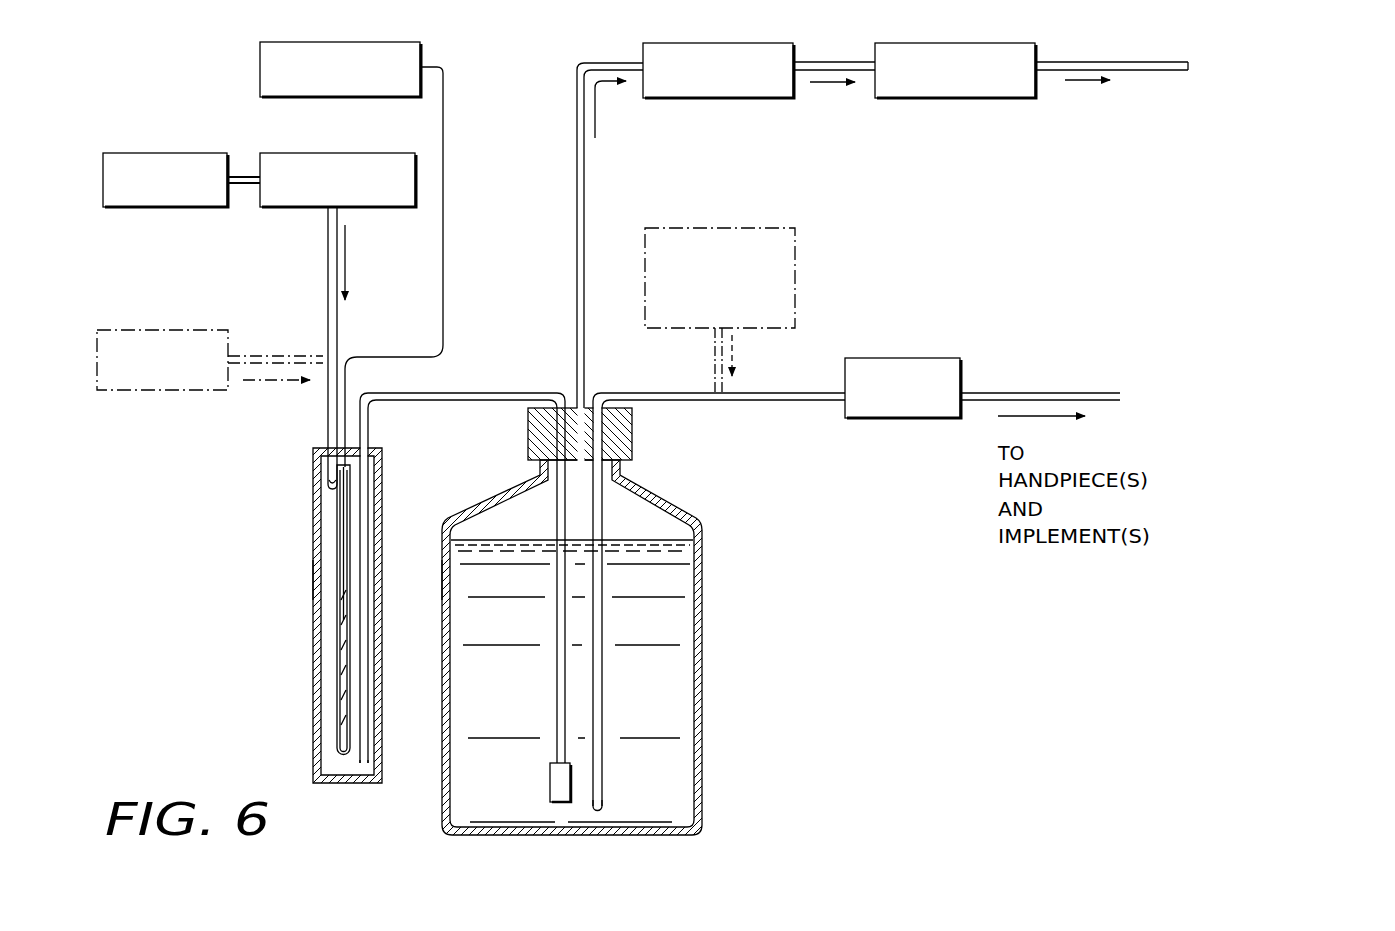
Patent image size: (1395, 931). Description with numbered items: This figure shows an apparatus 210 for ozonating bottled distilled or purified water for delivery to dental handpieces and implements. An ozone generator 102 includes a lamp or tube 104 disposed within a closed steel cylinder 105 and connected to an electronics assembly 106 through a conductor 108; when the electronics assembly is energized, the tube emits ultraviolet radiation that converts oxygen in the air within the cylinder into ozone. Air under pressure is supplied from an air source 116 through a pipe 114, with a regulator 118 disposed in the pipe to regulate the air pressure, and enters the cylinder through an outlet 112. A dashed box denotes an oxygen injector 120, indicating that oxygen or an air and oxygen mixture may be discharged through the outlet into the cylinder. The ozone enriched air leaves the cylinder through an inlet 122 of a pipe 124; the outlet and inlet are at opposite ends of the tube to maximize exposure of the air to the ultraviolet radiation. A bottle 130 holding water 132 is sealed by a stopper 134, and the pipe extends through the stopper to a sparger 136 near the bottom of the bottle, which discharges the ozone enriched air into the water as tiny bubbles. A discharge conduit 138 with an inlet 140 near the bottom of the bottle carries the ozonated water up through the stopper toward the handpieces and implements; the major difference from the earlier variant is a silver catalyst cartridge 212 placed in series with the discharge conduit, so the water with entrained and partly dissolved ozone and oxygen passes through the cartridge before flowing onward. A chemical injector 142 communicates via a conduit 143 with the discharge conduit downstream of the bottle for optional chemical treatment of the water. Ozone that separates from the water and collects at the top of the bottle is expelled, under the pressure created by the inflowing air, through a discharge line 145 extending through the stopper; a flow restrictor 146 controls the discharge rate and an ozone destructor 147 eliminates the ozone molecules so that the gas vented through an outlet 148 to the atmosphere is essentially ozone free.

The ozone generator 102 is at (311, 678).
The lamp or tube 104 is at (338, 728).
The closed steel cylinder 105 is at (313, 578).
The electronics assembly 106 is at (410, 40).
The conductor 108 is at (443, 178).
The outlet 112 is at (322, 497).
The pipe 114 is at (328, 420).
The air source 116 is at (208, 152).
The regulator 118 is at (377, 133).
The oxygen injector 120 is at (196, 331).
The inlet 122 is at (364, 769).
The pipe 124 is at (405, 400).
The bottle 130 is at (703, 644).
The water 132 is at (670, 703).
The stopper 134 is at (634, 441).
The sparger 136 is at (550, 773).
The discharge conduit 138 is at (604, 506).
The inlet 140 is at (604, 801).
The chemical injector 142 is at (796, 291).
The conduit 143 is at (716, 359).
The discharge line 145 is at (585, 184).
The flow restrictor 146 is at (801, 37).
The ozone destructor 147 is at (1051, 37).
The outlet 148 is at (1140, 62).
The apparatus 210 is at (432, 566).
The silver catalyst cartridge 212 is at (910, 358).